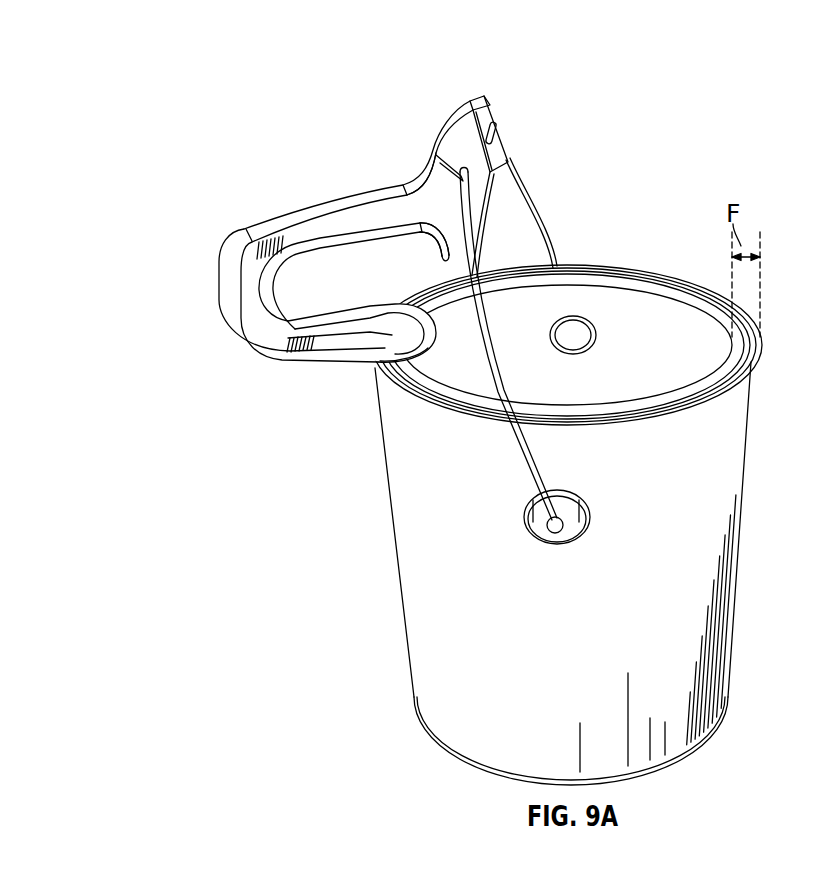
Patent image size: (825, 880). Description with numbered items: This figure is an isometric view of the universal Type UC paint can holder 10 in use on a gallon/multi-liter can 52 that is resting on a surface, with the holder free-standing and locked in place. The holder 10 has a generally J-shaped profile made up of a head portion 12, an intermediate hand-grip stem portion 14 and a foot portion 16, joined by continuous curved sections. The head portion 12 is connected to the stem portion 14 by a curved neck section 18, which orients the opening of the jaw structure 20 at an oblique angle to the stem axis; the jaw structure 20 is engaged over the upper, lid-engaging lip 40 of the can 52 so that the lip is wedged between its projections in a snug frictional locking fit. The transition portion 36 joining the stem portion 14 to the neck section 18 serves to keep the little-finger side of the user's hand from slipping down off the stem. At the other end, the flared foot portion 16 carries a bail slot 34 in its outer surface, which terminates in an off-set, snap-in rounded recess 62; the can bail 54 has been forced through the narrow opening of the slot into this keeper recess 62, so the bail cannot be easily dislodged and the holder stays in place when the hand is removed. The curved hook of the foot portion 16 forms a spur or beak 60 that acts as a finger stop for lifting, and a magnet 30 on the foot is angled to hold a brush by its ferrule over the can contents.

The paint can holder 10 is at (358, 273).
The head portion 12 is at (447, 330).
The stem portion 14 is at (300, 207).
The foot portion 16 is at (421, 151).
The neck section 18 is at (320, 348).
The jaw structure 20 is at (372, 352).
The magnet 30 is at (495, 133).
The bail slot 34 is at (433, 133).
The transition portion 36 is at (222, 306).
The lid-engaging lip 40 is at (754, 348).
The gallon/multi-liter can 52 is at (584, 626).
The can bail 54 is at (547, 224).
The spur or beak 60 is at (447, 248).
The snap-in rounded recess 62 is at (505, 160).